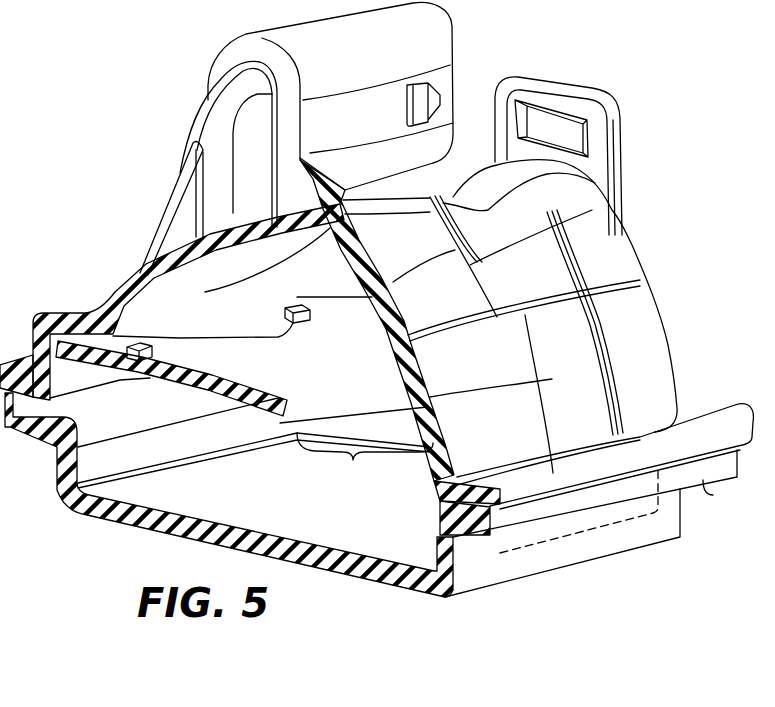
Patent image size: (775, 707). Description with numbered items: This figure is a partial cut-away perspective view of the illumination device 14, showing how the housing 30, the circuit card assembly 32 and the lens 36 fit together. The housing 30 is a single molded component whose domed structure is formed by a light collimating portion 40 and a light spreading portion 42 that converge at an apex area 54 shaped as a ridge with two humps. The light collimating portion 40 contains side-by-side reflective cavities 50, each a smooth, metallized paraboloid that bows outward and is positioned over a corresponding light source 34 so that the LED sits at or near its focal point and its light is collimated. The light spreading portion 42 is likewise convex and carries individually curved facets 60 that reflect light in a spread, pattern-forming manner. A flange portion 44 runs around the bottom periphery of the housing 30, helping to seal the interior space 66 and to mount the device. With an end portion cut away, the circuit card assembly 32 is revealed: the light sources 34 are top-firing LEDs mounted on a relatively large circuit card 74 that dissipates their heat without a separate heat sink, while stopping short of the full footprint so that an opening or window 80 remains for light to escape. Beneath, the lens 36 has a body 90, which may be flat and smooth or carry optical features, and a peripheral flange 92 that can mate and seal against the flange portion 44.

The illumination device 14 is at (590, 67).
The housing 30 is at (150, 173).
The circuit card assembly 32 is at (140, 383).
The light source 34 is at (290, 317).
The lens 36 is at (684, 540).
The light collimating portion 40 is at (117, 271).
The light spreading portion 42 is at (636, 250).
The flange portion 44 is at (700, 410).
The reflective cavity 50 is at (222, 290).
The apex area 54 is at (467, 166).
The curved facets 60 is at (568, 337).
The interior space 66 is at (308, 355).
The circuit card 74 is at (211, 400).
The opening or window 80 is at (365, 461).
The body 90 is at (157, 500).
The peripheral flange 92 is at (713, 495).